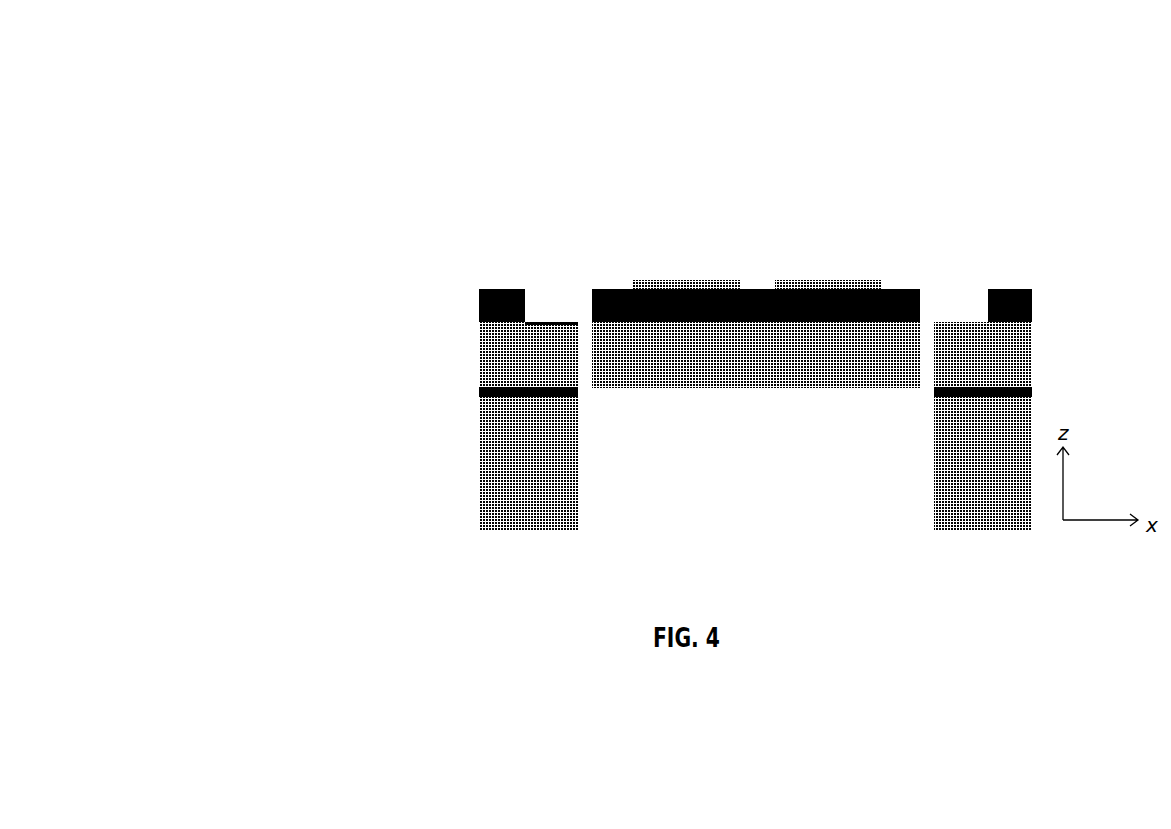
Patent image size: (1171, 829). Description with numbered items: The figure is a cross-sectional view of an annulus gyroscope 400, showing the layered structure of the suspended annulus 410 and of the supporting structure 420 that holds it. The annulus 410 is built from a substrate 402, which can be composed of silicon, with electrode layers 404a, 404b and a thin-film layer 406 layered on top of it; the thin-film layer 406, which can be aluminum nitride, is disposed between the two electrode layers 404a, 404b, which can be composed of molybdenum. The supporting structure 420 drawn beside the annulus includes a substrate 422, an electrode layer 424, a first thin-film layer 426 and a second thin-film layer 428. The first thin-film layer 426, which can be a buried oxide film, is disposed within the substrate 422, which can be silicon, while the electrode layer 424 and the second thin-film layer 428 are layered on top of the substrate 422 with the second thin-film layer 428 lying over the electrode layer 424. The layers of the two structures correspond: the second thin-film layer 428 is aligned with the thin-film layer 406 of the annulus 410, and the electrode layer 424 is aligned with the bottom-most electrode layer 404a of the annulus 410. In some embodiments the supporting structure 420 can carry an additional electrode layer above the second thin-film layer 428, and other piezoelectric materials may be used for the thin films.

The annulus gyroscope 400 is at (280, 88).
The substrate 402 is at (712, 389).
The electrode layer 404a is at (908, 328).
The electrode layer 404b is at (833, 281).
The thin-film layer 406 is at (908, 289).
The annulus 410 is at (691, 208).
The supporting structure 420 is at (337, 270).
The substrate 422 is at (478, 372).
The electrode layer 424 is at (563, 322).
The first thin-film layer 426 is at (478, 389).
The second thin-film layer 428 is at (480, 305).